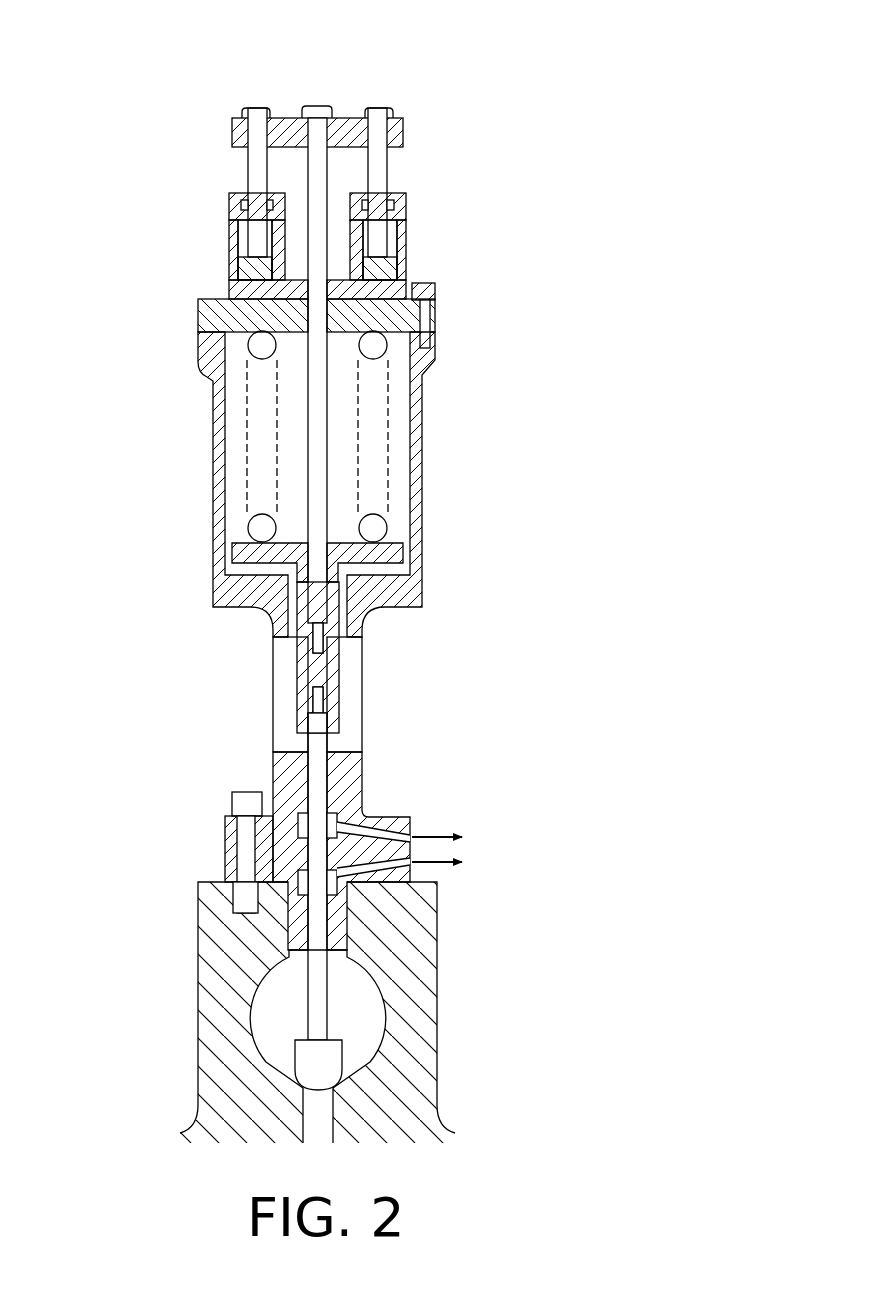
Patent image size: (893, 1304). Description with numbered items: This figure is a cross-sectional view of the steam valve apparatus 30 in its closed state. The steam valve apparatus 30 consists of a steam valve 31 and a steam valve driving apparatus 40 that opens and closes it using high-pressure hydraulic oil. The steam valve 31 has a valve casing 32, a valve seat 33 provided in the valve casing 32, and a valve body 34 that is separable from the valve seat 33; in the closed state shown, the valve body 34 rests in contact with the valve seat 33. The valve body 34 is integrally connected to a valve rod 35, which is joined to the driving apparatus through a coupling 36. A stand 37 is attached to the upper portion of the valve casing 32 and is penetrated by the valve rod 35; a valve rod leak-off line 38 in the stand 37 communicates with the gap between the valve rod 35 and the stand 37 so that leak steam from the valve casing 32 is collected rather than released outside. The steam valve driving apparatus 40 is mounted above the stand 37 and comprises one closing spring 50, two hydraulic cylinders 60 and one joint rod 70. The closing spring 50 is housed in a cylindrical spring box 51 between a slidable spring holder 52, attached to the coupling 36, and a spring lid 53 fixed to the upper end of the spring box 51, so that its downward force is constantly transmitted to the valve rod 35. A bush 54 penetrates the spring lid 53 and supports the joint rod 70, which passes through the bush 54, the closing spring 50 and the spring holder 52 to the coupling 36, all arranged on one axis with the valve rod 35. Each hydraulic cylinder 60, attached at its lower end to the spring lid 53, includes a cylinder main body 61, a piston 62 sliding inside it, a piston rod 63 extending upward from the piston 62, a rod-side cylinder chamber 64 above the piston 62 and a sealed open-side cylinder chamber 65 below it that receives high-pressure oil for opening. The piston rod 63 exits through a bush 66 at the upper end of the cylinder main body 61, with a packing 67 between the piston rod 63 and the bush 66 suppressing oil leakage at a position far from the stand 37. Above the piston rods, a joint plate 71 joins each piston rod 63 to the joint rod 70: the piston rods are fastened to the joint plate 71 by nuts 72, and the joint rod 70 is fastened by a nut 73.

The steam valve apparatus 30 is at (530, 78).
The steam valve 31 is at (118, 893).
The valve casing 32 is at (425, 1113).
The valve seat 33 is at (300, 1085).
The valve body 34 is at (340, 1048).
The valve rod 35 is at (330, 990).
The coupling 36 is at (340, 680).
The stand 37 is at (355, 767).
The valve rod leak-off line 38 is at (395, 816).
The steam valve driving apparatus 40 is at (110, 251).
The closing spring 50 is at (390, 427).
The spring box 51 is at (222, 463).
The spring holder 52 is at (395, 548).
The spring lid 53 is at (205, 324).
The bush 54 is at (345, 348).
The hydraulic cylinder 60 is at (135, 206).
The cylinder main body 61 is at (235, 262).
The piston 62 is at (235, 272).
The piston rod 63 is at (250, 160).
The rod-side cylinder chamber 64 is at (238, 238).
The open-side cylinder chamber 65 is at (232, 292).
The bush 66 is at (240, 206).
The packing 67 is at (235, 205).
The joint rod 70 is at (318, 487).
The joint plate 71 is at (403, 128).
The nut 72 is at (252, 105).
The nut 73 is at (317, 104).